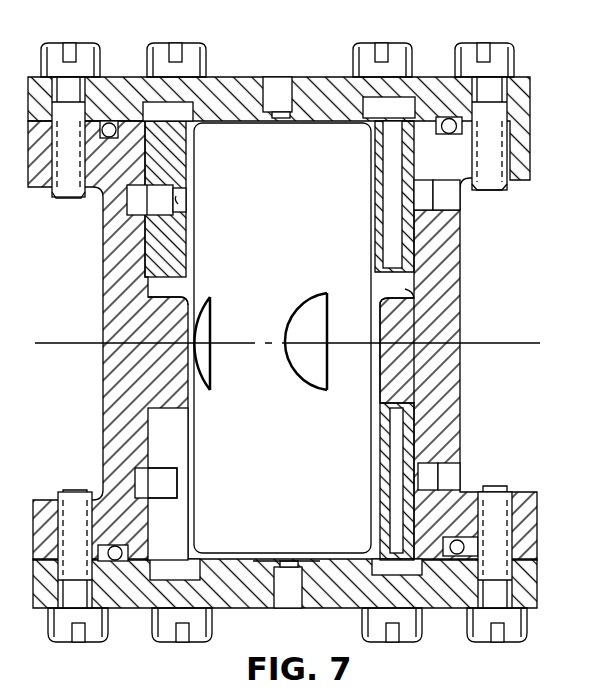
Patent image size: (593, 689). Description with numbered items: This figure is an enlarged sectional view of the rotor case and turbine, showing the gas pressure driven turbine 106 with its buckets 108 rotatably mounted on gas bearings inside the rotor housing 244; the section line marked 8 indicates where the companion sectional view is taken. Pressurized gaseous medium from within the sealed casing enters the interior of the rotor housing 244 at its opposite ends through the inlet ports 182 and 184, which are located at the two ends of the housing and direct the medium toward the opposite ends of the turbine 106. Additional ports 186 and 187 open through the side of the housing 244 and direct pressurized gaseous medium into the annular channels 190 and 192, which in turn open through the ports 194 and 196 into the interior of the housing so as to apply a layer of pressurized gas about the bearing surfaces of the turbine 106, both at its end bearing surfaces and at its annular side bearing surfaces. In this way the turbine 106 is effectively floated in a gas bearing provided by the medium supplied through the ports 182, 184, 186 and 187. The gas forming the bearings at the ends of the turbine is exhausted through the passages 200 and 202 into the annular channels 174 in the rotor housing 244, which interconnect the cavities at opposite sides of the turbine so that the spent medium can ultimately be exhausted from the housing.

The section line 8- 8 is at (38, 360).
The turbine 106 is at (277, 371).
The buckets 108 is at (305, 310).
The annular channels 174 is at (155, 295).
The inlet port 182 is at (280, 110).
The inlet port 184 is at (287, 566).
The port 186 is at (455, 478).
The port 187 is at (450, 200).
The annular channel 190 is at (137, 478).
The annular channel 192 is at (422, 195).
The port 194 is at (177, 483).
The port 196 is at (182, 222).
The passage 200 is at (397, 430).
The passage 202 is at (390, 222).
The rotor housing 244 is at (113, 261).